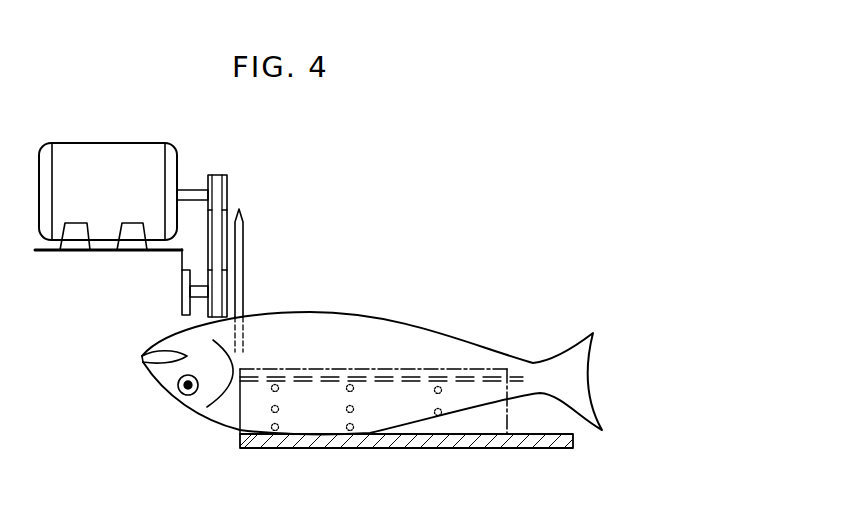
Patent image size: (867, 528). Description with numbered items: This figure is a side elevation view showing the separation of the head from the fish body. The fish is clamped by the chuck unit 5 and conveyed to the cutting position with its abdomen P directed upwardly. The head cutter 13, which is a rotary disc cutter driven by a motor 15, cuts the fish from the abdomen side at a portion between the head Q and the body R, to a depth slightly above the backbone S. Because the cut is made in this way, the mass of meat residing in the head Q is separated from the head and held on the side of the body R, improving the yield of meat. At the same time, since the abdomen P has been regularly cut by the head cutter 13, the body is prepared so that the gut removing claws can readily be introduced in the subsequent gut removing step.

The motor 15 is at (101, 170).
The head cutter 13 is at (242, 231).
The chuck unit 5 is at (398, 366).
The abdomen P is at (339, 325).
The head Q is at (167, 378).
The backbone S is at (302, 380).
The body R is at (402, 412).